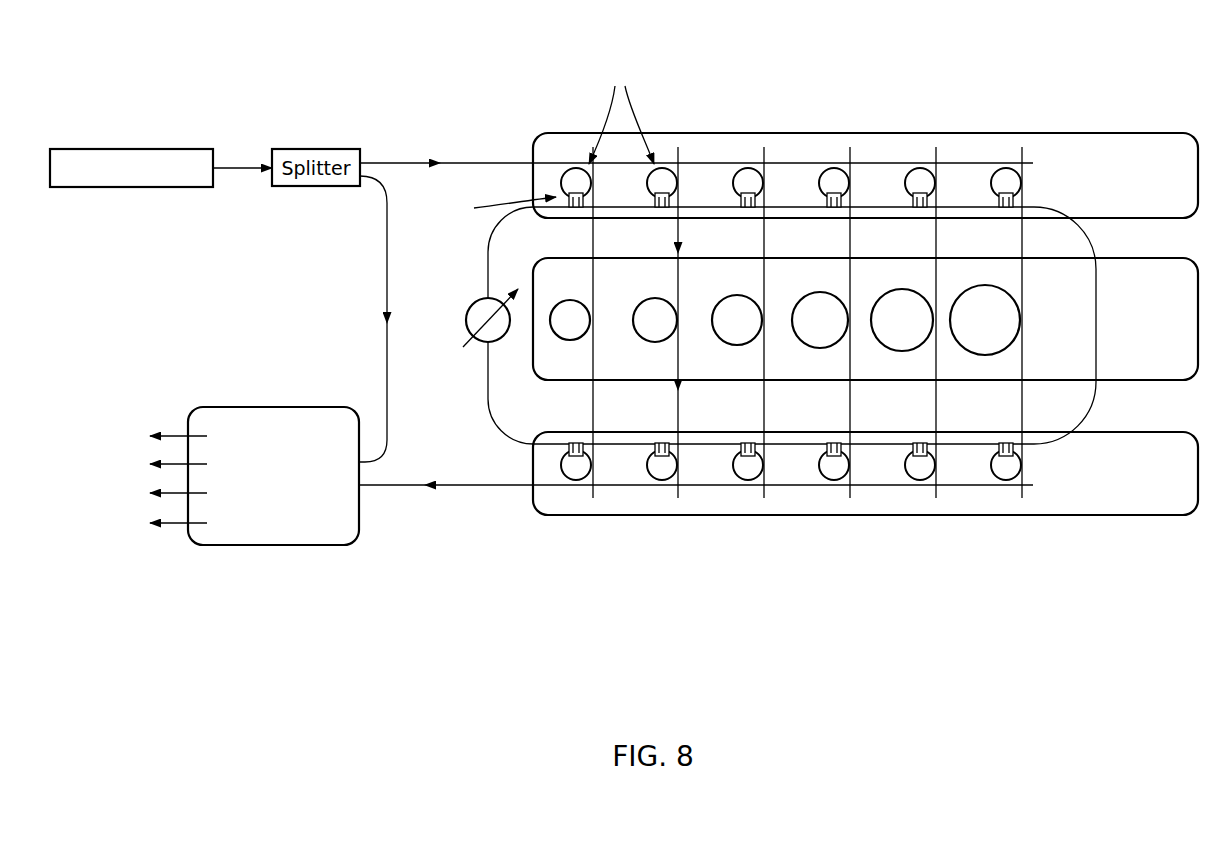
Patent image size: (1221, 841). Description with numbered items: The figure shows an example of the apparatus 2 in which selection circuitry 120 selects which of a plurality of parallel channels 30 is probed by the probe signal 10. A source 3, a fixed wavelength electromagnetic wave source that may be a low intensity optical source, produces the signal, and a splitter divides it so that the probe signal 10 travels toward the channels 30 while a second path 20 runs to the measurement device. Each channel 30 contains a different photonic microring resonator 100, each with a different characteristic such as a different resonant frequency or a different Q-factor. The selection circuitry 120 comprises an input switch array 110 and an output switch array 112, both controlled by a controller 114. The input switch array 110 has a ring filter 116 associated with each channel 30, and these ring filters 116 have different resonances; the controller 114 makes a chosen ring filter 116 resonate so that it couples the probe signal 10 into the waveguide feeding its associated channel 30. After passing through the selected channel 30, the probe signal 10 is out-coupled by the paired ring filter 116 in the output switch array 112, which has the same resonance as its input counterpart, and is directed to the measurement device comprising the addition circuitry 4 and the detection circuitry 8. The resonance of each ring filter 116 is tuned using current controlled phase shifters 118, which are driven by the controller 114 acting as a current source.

The apparatus 2 is at (989, 64).
The source 3 is at (130, 187).
The addition circuitry 4 is at (322, 545).
The detection circuitry 8 is at (212, 545).
The probe signal 10 is at (472, 160).
The reference waveguide 20 is at (387, 375).
The parallel channel 30 is at (606, 299).
The photonic microring resonator 100 is at (570, 340).
The input switch array 110 is at (1118, 133).
The output switch array 112 is at (1142, 515).
The controller 114 is at (478, 342).
The ring filter 116 is at (571, 156).
The current controlled phase shifter 118 is at (570, 217).
The selection circuitry 120 is at (594, 600).